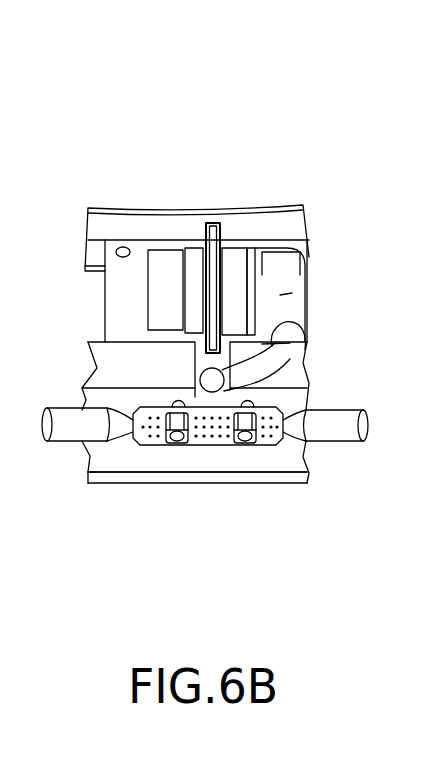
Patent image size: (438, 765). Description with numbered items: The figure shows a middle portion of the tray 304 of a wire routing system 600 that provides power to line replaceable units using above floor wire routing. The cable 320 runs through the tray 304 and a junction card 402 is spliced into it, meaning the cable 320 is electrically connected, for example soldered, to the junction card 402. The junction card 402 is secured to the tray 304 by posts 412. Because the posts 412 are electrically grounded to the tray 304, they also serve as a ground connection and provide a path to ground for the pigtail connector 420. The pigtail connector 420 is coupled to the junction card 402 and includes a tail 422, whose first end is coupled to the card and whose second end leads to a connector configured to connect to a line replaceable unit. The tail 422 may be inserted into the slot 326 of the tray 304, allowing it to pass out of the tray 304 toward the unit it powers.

The wire routing system 600 is at (149, 136).
The tray 304 is at (247, 188).
The pigtail connector 420 is at (278, 279).
The tail 422 is at (296, 346).
The cable 320 is at (55, 407).
The posts 412 is at (174, 444).
The slot 326 is at (211, 338).
The junction card 402 is at (252, 505).